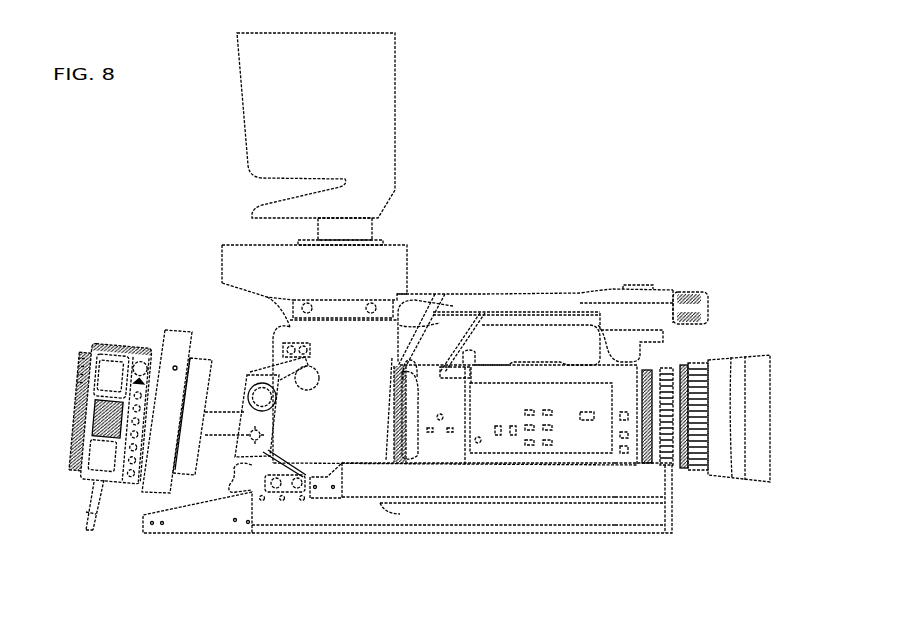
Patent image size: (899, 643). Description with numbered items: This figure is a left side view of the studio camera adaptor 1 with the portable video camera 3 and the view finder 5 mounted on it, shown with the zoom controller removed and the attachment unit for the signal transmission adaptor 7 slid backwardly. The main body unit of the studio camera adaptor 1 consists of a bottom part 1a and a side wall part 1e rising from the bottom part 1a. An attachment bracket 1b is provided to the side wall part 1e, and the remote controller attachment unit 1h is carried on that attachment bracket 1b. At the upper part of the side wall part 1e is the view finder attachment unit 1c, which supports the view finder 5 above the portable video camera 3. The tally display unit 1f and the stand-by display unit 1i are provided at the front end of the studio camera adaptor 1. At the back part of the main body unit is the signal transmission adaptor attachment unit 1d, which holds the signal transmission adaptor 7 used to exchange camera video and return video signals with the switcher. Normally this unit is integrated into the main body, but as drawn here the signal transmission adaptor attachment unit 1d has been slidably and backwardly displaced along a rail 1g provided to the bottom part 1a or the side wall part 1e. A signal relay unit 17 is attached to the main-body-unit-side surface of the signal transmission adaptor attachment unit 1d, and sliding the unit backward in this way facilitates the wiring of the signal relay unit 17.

The studio camera adaptor 1 is at (412, 226).
The bottom part 1a is at (497, 535).
The attachment bracket 1b is at (238, 487).
The view finder attachment unit 1c is at (235, 250).
The signal transmission adaptor attachment unit 1d is at (178, 332).
The side wall part 1e is at (262, 320).
The tally display unit 1f is at (672, 505).
The rail 1g is at (218, 415).
The remote controller attachment unit 1h is at (262, 395).
The stand-by display unit 1i is at (669, 523).
The portable video camera 3 is at (563, 275).
The view finder 5 is at (368, 83).
The signal transmission adaptor 7 is at (112, 345).
The signal relay unit 17 is at (202, 358).